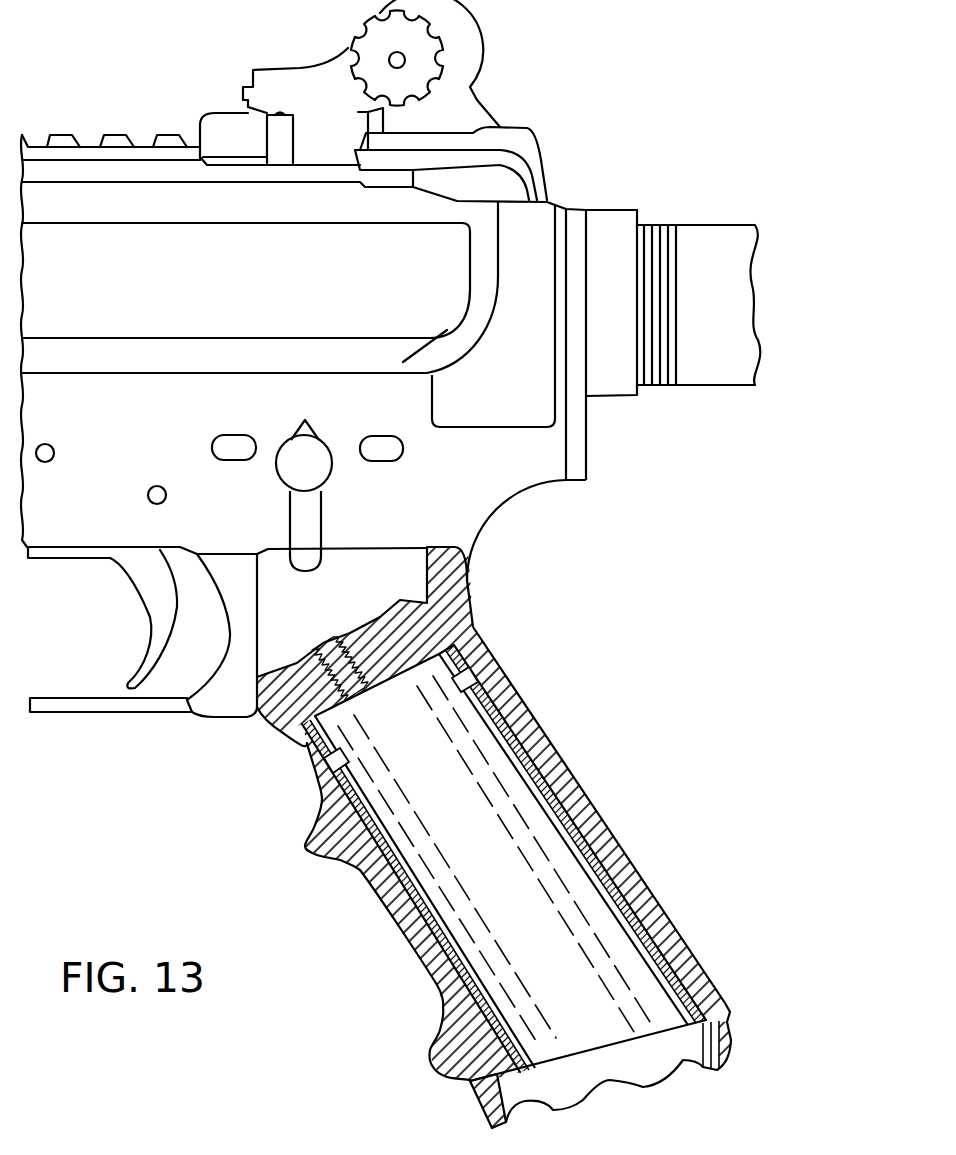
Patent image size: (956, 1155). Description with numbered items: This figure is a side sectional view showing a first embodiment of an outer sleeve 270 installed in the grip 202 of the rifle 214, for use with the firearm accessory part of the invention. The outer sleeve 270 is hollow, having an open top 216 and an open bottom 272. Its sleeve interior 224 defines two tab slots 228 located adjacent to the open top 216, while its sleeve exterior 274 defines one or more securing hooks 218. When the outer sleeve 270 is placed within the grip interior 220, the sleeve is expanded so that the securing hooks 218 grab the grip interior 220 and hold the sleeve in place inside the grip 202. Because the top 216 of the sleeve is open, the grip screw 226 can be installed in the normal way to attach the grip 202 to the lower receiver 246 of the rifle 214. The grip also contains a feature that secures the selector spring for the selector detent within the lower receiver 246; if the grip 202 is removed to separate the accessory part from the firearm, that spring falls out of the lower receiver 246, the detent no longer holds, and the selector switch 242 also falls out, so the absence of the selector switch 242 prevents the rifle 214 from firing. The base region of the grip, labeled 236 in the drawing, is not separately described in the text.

The AR-15 rifle 214 is at (558, 170).
The lower receiver 246 is at (540, 440).
The selector switch 242 is at (315, 473).
The open top 216 is at (440, 630).
The grip 202 is at (470, 614).
The securing hooks 218 is at (462, 642).
The tab slots 228 is at (473, 687).
The grip screw 226 is at (283, 728).
The outer sleeve 270 is at (550, 762).
The sleeve exterior 274 is at (580, 797).
The grip interior 220 is at (587, 873).
The sleeve interior 224 is at (610, 903).
The bottom 272 is at (723, 1037).
The grip base 236 is at (730, 1068).